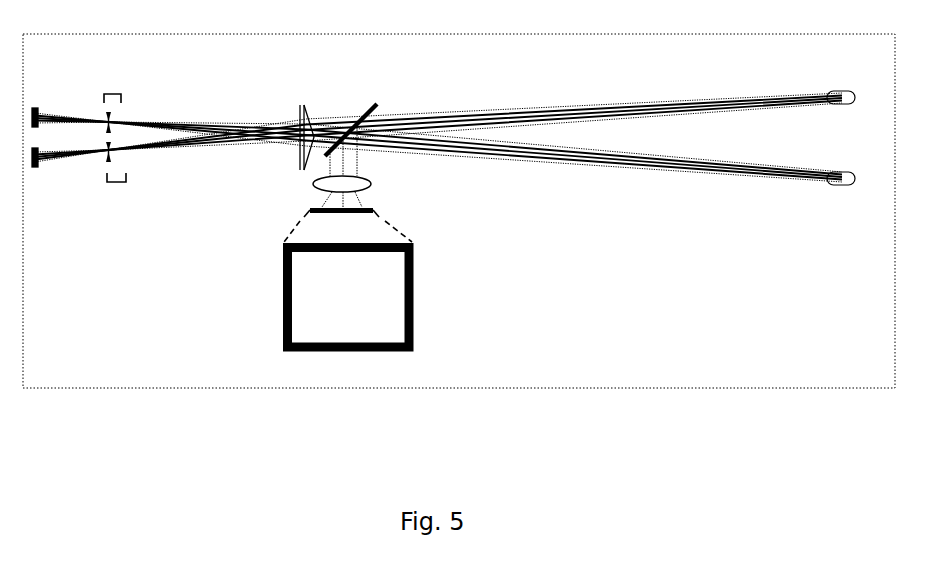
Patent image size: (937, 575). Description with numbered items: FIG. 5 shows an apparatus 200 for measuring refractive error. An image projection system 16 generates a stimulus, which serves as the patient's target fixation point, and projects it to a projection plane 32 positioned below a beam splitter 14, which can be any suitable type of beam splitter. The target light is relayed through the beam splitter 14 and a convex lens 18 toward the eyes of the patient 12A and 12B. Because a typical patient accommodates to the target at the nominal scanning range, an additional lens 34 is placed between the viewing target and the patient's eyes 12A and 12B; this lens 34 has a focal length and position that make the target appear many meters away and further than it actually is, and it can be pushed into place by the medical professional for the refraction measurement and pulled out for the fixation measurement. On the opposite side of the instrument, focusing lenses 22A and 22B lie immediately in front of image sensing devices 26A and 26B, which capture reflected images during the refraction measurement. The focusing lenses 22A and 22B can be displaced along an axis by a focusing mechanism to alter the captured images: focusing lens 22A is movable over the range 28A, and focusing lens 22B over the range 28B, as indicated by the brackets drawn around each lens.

The optical system 200 is at (138, 390).
The patient eye 12A is at (845, 90).
The patient eye 12B is at (845, 185).
The beam splitter 14 is at (379, 103).
The image projection system 16 is at (407, 327).
The convex lens 18 is at (310, 120).
The focusing lens 22A is at (113, 118).
The focusing lens 22B is at (115, 156).
The image sensing device 26A is at (43, 105).
The image sensing device 26B is at (42, 170).
The displacement range 28A is at (117, 90).
The displacement range 28B is at (117, 190).
The projection plane 32 is at (312, 210).
The additional lens 34 is at (310, 179).